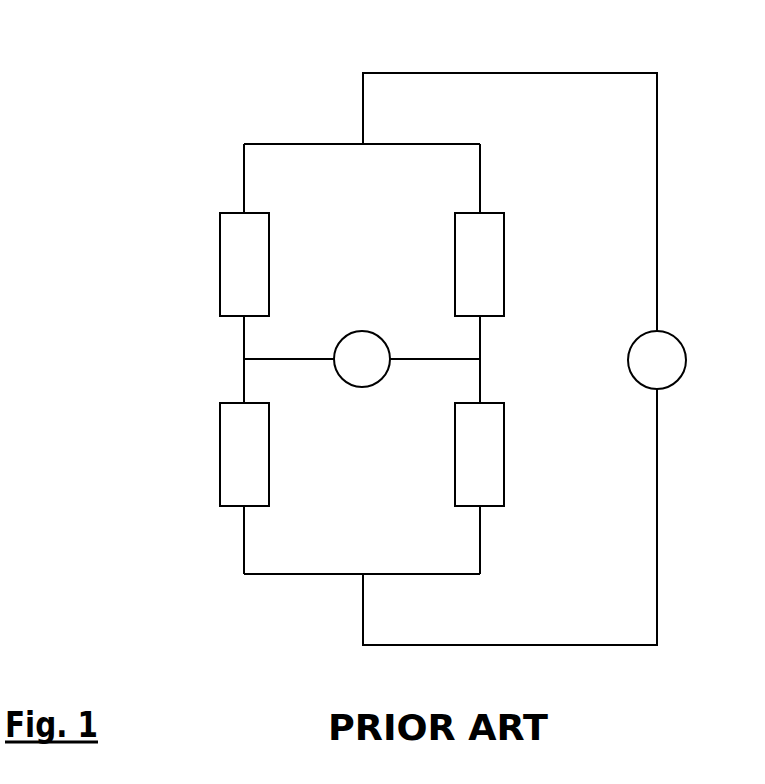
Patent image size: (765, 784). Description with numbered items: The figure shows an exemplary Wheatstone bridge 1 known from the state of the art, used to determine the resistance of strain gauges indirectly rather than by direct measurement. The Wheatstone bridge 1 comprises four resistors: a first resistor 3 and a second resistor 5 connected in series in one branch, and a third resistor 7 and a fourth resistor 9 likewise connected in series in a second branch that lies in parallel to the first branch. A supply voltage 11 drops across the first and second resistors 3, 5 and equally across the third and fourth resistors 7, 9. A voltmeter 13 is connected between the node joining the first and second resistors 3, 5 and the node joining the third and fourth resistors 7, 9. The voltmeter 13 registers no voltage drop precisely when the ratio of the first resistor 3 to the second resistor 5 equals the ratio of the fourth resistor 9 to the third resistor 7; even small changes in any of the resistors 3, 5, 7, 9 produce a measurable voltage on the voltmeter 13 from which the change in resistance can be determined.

The Wheatstone bridge 1 is at (222, 117).
The first resistor 3 is at (235, 278).
The second resistor 5 is at (235, 472).
The third resistor 7 is at (471, 472).
The fourth resistor 9 is at (471, 278).
The supply voltage 11 is at (641, 372).
The voltmeter 13 is at (346, 372).